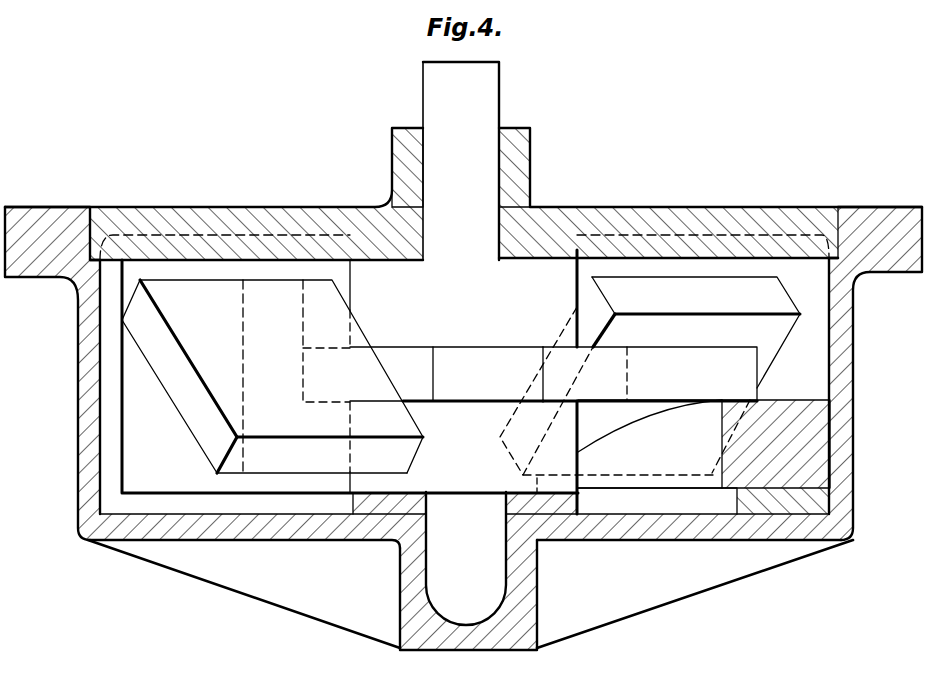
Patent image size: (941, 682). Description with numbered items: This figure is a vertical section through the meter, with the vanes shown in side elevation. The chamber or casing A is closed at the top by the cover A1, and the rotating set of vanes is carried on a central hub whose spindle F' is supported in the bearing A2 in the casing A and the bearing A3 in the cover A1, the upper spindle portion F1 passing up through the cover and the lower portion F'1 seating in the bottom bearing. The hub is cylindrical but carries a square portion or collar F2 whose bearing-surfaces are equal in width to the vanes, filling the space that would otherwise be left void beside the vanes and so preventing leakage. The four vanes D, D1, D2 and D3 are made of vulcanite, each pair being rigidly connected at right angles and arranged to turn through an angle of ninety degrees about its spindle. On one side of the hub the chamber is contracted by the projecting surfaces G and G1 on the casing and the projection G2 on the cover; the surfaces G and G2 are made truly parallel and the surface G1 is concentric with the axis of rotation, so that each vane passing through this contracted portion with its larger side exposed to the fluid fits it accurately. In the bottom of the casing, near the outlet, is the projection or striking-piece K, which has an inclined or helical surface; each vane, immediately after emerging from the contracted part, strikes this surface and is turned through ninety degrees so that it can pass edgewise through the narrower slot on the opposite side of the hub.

The chamber or casing A is at (463, 428).
The cover A1 is at (463, 194).
The bearing A2 is at (470, 595).
The bearing A3 is at (474, 167).
The spindle F1 is at (461, 161).
The spindle F' is at (479, 456).
The spindle F'1 is at (466, 558).
The square portion or collar F2 is at (423, 374).
The projecting surface G is at (186, 493).
The projecting surface G1 is at (280, 376).
The projection G2 is at (190, 262).
The vane D is at (325, 384).
The vane D1 is at (696, 375).
The vane D2 is at (628, 399).
The vane D3 is at (272, 376).
The projection or striking-piece K is at (704, 457).